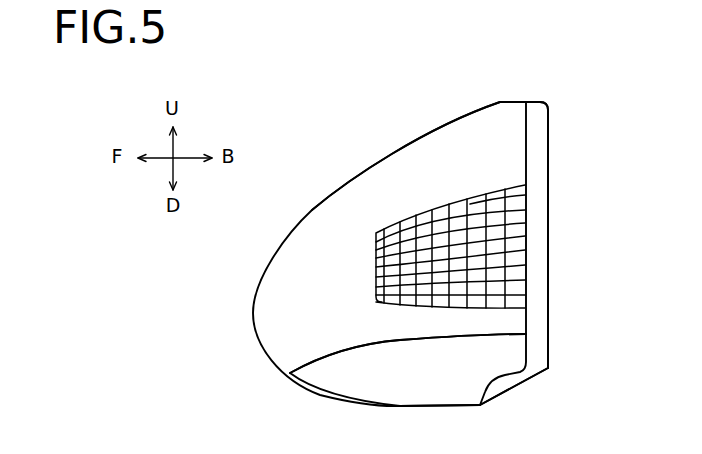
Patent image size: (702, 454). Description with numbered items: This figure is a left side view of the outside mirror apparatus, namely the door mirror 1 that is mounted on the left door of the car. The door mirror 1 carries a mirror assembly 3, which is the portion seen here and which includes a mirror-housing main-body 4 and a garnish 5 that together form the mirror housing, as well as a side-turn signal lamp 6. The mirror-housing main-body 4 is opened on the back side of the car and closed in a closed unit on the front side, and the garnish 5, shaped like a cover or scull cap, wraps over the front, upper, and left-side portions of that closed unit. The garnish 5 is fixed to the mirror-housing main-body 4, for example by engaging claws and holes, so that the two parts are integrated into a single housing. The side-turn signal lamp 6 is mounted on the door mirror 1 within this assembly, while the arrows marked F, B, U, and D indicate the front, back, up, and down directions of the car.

The door mirror 1 is at (356, 170).
The mirror assembly 3 is at (475, 105).
The mirror-housing main-body 4 is at (340, 383).
The garnish 5 is at (420, 147).
The side-turn signal lamp 6 is at (515, 220).